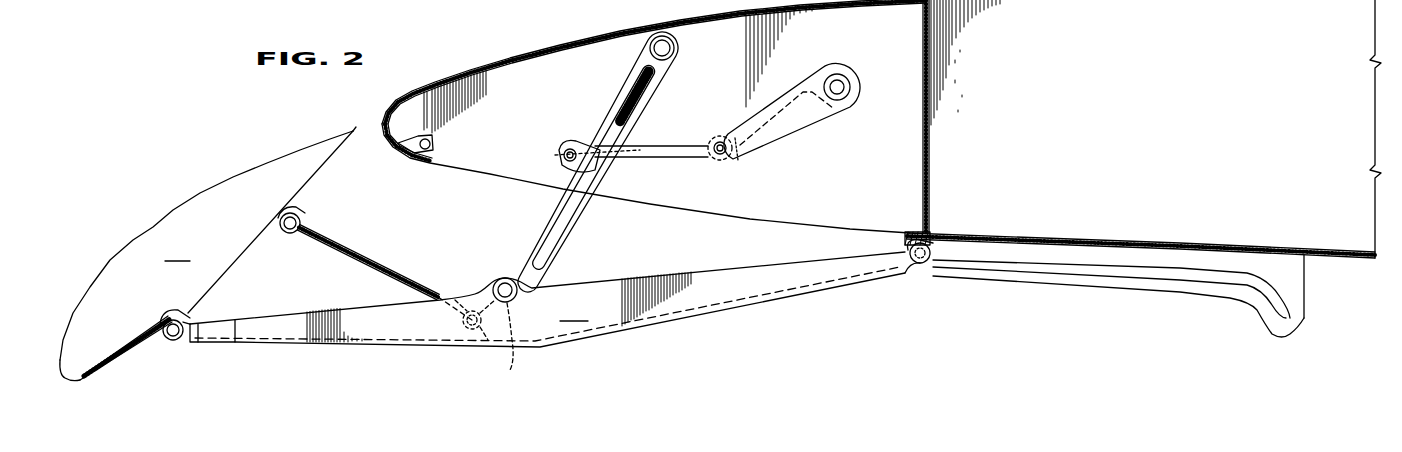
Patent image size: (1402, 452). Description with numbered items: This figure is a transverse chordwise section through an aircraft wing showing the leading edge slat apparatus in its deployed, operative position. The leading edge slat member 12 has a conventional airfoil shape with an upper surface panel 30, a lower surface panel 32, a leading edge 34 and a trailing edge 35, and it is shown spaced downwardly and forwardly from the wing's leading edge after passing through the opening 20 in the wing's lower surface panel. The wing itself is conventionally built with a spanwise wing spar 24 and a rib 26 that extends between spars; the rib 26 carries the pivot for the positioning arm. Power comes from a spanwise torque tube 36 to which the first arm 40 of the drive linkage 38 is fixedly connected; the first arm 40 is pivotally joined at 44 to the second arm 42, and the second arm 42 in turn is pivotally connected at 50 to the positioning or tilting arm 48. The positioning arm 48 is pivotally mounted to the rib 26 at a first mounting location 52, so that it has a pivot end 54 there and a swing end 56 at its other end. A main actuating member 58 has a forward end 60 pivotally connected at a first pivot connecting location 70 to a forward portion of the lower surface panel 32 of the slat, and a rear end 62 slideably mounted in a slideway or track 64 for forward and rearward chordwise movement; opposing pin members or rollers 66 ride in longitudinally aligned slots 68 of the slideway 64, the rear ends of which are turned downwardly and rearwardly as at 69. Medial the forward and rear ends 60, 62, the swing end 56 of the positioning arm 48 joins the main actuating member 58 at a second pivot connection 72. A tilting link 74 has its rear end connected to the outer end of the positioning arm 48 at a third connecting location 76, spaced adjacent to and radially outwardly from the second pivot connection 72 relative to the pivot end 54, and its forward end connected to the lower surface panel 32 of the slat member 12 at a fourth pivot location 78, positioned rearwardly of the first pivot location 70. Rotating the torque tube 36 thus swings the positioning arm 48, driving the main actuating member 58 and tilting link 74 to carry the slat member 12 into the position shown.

The leading edge slat member 12 is at (211, 254).
The opening 20 is at (450, 157).
The wing spar 24 is at (929, 175).
The rib 26 is at (725, 50).
The upper surface panel 30 is at (194, 200).
The lower surface panel 32 is at (220, 268).
The leading edge 34 is at (76, 381).
The trailing edge 35 is at (357, 133).
The power hinge or torque tube 36 is at (860, 77).
The drive linkage 38 is at (807, 124).
The first arm 40 is at (788, 130).
The second arm 42 is at (674, 156).
The pivot connection 44 is at (720, 140).
The positioning or tilting arm 48 is at (626, 162).
The pivot connection 50 is at (569, 143).
The first mounting location 52 is at (678, 45).
The pivot end 54 is at (640, 65).
The swing end 56 is at (510, 370).
The main actuating member 58 is at (576, 315).
The forward end 60 is at (213, 347).
The rear end 62 is at (900, 277).
The slideway or track 64 is at (1075, 284).
The pin members or rollers 66 is at (930, 265).
The slots 68 is at (1145, 270).
The downwardly and rearwardly turned slot end 69 is at (1283, 318).
The first pivot connecting location 70 is at (177, 340).
The second pivot connection 72 is at (495, 278).
The tilting link 74 is at (373, 258).
The third connecting location 76 is at (480, 328).
The fourth pivot location 78 is at (300, 215).